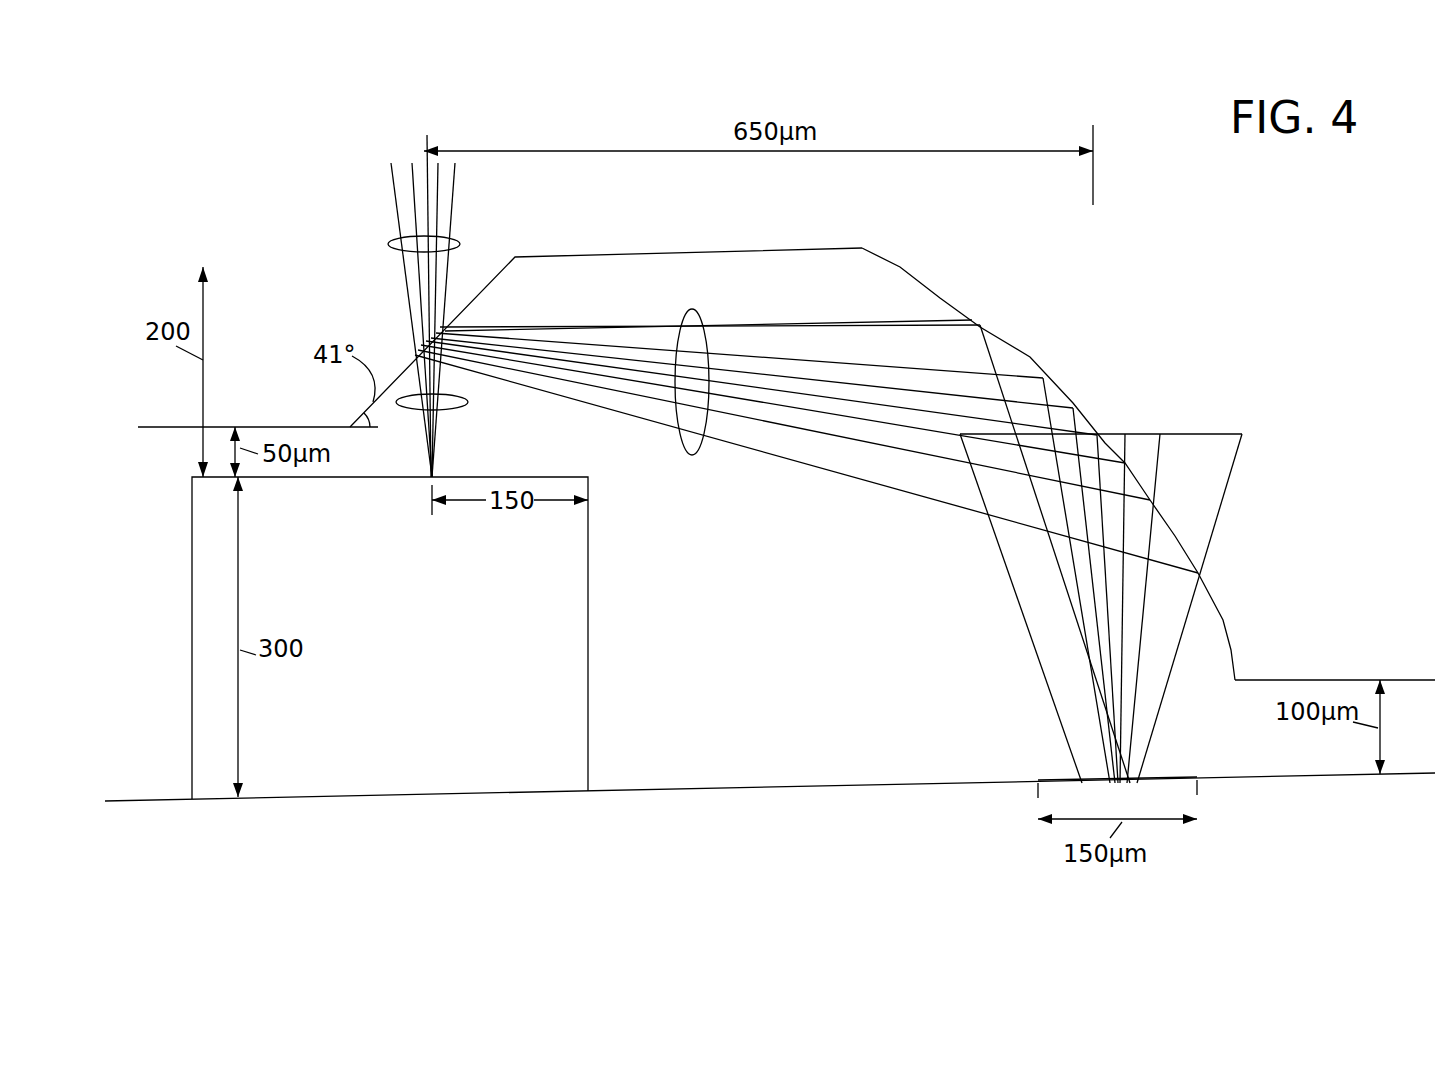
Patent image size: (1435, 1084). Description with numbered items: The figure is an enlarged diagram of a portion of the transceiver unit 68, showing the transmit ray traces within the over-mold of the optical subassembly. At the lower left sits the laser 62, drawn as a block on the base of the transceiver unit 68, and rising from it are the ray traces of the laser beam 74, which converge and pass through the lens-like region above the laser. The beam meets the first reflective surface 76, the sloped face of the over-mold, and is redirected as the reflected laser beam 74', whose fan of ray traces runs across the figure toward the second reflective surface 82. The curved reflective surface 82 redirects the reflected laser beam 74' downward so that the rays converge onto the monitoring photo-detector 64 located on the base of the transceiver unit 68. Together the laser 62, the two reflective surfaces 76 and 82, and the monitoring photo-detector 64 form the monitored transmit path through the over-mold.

The laser 62 is at (200, 585).
The monitoring photo-detector 64 is at (1047, 792).
The transceiver unit 68 is at (398, 823).
The laser beam 74 is at (432, 323).
The reflected laser beam 74' is at (709, 362).
The reflective surface 76 is at (484, 283).
The reflective surface 82 is at (1036, 351).